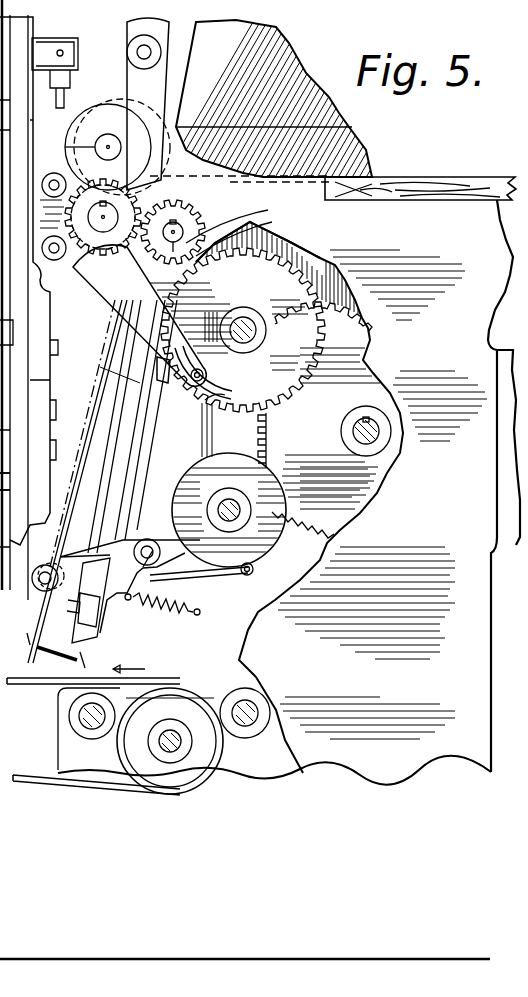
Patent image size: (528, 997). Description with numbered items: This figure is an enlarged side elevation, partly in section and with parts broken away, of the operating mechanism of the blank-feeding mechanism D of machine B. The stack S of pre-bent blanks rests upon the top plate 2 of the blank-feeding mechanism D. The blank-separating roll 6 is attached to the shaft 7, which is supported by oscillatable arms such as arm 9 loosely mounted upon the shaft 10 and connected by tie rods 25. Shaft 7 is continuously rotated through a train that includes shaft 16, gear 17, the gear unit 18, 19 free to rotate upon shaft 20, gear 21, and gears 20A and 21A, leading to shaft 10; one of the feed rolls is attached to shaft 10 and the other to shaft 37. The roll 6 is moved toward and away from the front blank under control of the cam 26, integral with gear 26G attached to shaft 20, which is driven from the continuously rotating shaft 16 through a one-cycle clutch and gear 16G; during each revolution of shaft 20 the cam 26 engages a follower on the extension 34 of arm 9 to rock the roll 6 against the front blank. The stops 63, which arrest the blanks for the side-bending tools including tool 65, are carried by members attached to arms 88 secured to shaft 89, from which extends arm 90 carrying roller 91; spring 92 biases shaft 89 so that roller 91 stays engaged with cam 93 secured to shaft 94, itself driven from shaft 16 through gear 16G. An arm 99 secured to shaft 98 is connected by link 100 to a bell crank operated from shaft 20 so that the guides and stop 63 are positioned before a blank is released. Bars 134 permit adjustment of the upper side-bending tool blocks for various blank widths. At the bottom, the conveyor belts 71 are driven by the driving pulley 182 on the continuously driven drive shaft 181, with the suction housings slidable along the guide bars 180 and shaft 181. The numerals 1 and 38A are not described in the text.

The stack of pre-bent blanks S is at (282, 33).
The top plate 2 is at (425, 186).
The blank-feeding mechanism D is at (430, 242).
The extension of arm 34 is at (0, 294).
The arm 99 is at (62, 100).
The shaft 98 is at (145, 52).
The blank-separating roll 6 is at (112, 105).
The shaft 7 is at (110, 148).
The link 100 is at (78, 150).
The oscillatable arm 9 is at (77, 151).
The tie rod 25 is at (53, 184).
The shaft 10 is at (110, 258).
The gear 21A is at (186, 200).
The shaft 37 is at (187, 237).
The gear 20A is at (238, 222).
The gear 21 is at (252, 246).
The gear unit 19 is at (298, 268).
The shaft 20 is at (246, 326).
The gear unit 18 is at (323, 345).
The gear 26G is at (290, 388).
The cam 26 is at (207, 398).
The shaft 16 is at (372, 440).
The gear 17 is at (252, 446).
The shaft 94 is at (233, 512).
The cam 93 is at (286, 522).
The shaft 89 is at (147, 540).
The arm 90 is at (200, 575).
The roller 91 is at (258, 576).
The arm 88 is at (118, 606).
The spring 92 is at (186, 618).
The machine B is at (88, 388).
The guide 38A is at (120, 340).
The bar 134 is at (140, 383).
The roller 1 is at (32, 582).
The side-bending tool 65 is at (36, 612).
The stop 63 is at (30, 645).
The conveyor belt 71 is at (18, 682).
The drive shaft 181 is at (190, 780).
The driving pulley 182 is at (190, 708).
The guide bar 180 is at (92, 730).
The gear 16G is at (5, 474).